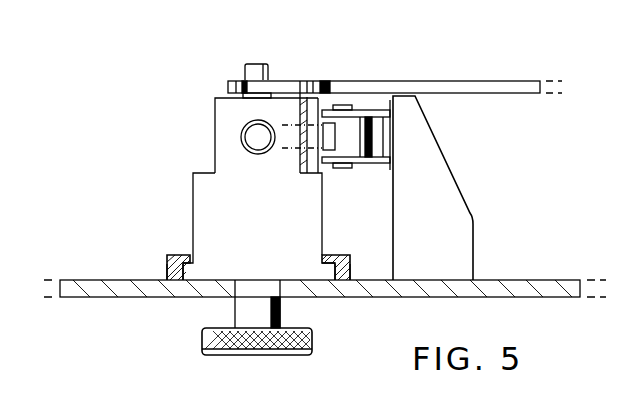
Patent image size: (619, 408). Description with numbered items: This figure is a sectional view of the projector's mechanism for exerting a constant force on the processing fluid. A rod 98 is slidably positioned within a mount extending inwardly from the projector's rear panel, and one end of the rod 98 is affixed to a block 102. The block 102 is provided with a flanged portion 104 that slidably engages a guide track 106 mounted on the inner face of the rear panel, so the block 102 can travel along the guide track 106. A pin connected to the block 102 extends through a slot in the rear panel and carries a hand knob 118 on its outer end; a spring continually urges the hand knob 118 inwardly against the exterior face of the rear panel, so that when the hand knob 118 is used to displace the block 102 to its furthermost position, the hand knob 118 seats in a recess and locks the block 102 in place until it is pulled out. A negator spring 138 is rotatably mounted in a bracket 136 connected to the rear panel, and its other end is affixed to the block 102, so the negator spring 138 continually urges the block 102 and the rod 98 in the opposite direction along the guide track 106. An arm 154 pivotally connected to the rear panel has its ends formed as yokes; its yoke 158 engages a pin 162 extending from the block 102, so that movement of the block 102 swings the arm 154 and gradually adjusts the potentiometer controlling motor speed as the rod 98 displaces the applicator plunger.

The rod 98 is at (250, 138).
The block 102 is at (197, 178).
The flanged portion 104 is at (186, 278).
The guide track 106 is at (168, 254).
The hand knob 118 is at (312, 345).
The bracket 136 is at (378, 108).
The negator spring 138 is at (358, 114).
The arm 154 is at (472, 82).
The yoke 158 is at (230, 84).
The pin 162 is at (263, 64).